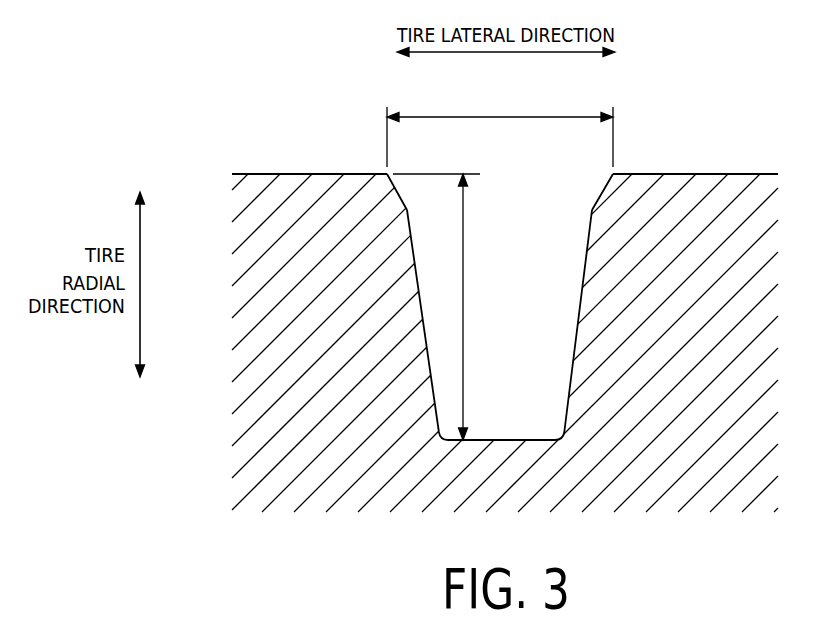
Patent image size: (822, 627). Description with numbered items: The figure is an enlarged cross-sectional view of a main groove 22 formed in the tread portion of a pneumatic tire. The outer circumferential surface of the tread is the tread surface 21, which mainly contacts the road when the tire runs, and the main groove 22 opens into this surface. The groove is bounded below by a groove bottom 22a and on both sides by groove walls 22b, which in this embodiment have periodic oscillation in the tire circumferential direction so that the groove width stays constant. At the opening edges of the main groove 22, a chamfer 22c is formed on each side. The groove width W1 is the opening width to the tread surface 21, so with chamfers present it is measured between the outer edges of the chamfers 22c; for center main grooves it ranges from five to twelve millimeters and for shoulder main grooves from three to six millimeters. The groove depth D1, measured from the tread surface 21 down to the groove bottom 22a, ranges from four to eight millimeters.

The tread surface 21 is at (725, 166).
The main groove 22 is at (500, 282).
The groove bottom 22a is at (503, 440).
The groove wall 22b is at (577, 325).
The chamfer 22c is at (401, 200).
The groove depth D1 is at (466, 252).
The groove width W1 is at (500, 129).